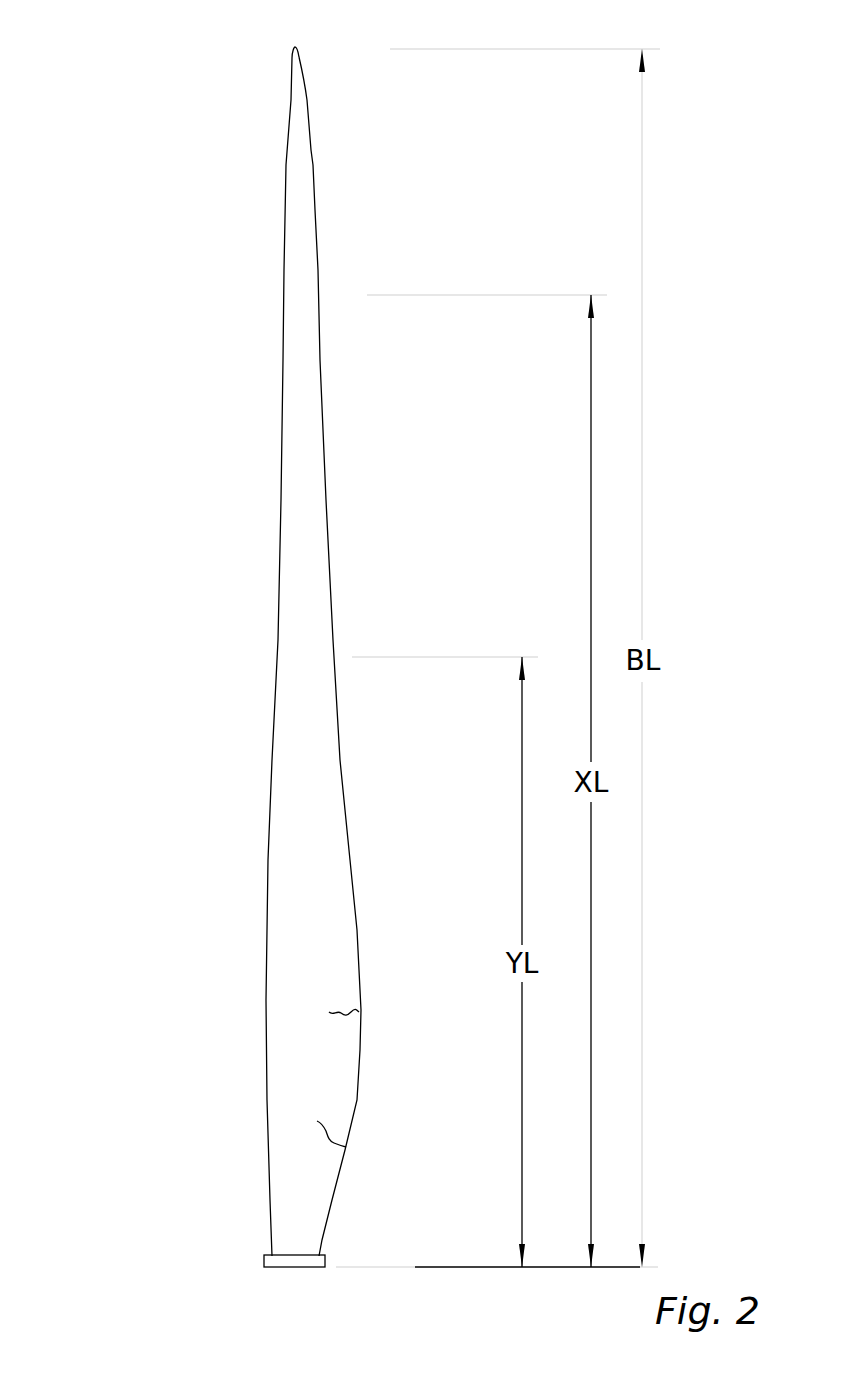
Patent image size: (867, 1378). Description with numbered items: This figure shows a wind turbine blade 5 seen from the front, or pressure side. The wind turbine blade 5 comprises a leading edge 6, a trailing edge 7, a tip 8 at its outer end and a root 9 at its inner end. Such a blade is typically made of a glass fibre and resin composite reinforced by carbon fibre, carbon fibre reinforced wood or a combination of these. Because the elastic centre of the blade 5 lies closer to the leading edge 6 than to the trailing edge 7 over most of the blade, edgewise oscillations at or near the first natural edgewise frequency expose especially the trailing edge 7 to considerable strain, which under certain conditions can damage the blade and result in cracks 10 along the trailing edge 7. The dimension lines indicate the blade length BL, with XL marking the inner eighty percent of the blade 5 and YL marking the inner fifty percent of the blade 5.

The wind turbine blade 5 is at (236, 472).
The leading edge 6 is at (278, 605).
The trailing edge 7 is at (339, 727).
The tip 8 is at (298, 47).
The root 9 is at (293, 1267).
The cracks 10 is at (355, 1010).